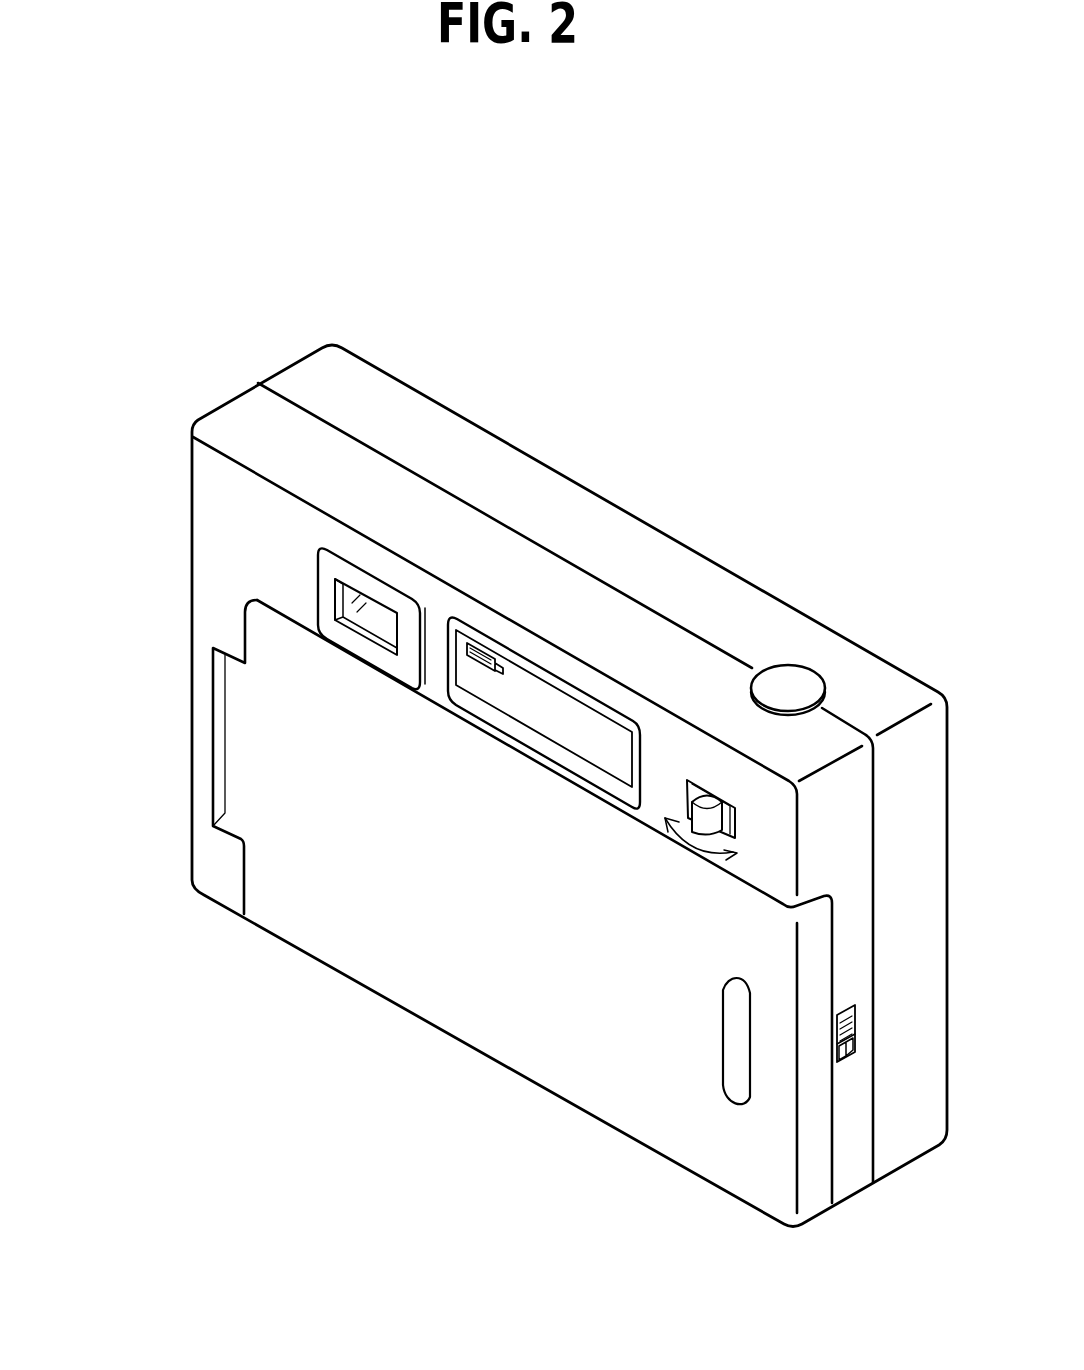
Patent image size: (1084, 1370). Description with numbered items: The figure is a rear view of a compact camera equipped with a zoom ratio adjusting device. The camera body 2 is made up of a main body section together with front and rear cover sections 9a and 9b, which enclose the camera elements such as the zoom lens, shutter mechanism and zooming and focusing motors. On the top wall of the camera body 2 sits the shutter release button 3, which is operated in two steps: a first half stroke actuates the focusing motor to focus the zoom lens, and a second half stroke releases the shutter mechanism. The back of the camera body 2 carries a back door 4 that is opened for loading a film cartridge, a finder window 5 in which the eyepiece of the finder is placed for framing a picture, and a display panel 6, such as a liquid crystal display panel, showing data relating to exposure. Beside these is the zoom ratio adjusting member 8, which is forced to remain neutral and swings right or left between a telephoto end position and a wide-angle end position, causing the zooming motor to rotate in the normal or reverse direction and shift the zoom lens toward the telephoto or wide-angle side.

The camera body 2 is at (528, 430).
The shutter release button 3 is at (803, 688).
The back door 4 is at (683, 1153).
The finder window 5 is at (343, 597).
The display panel 6 is at (563, 743).
The zoom ratio adjusting member 8 is at (704, 783).
The front cover section 9a is at (292, 375).
The rear cover section 9b is at (210, 463).